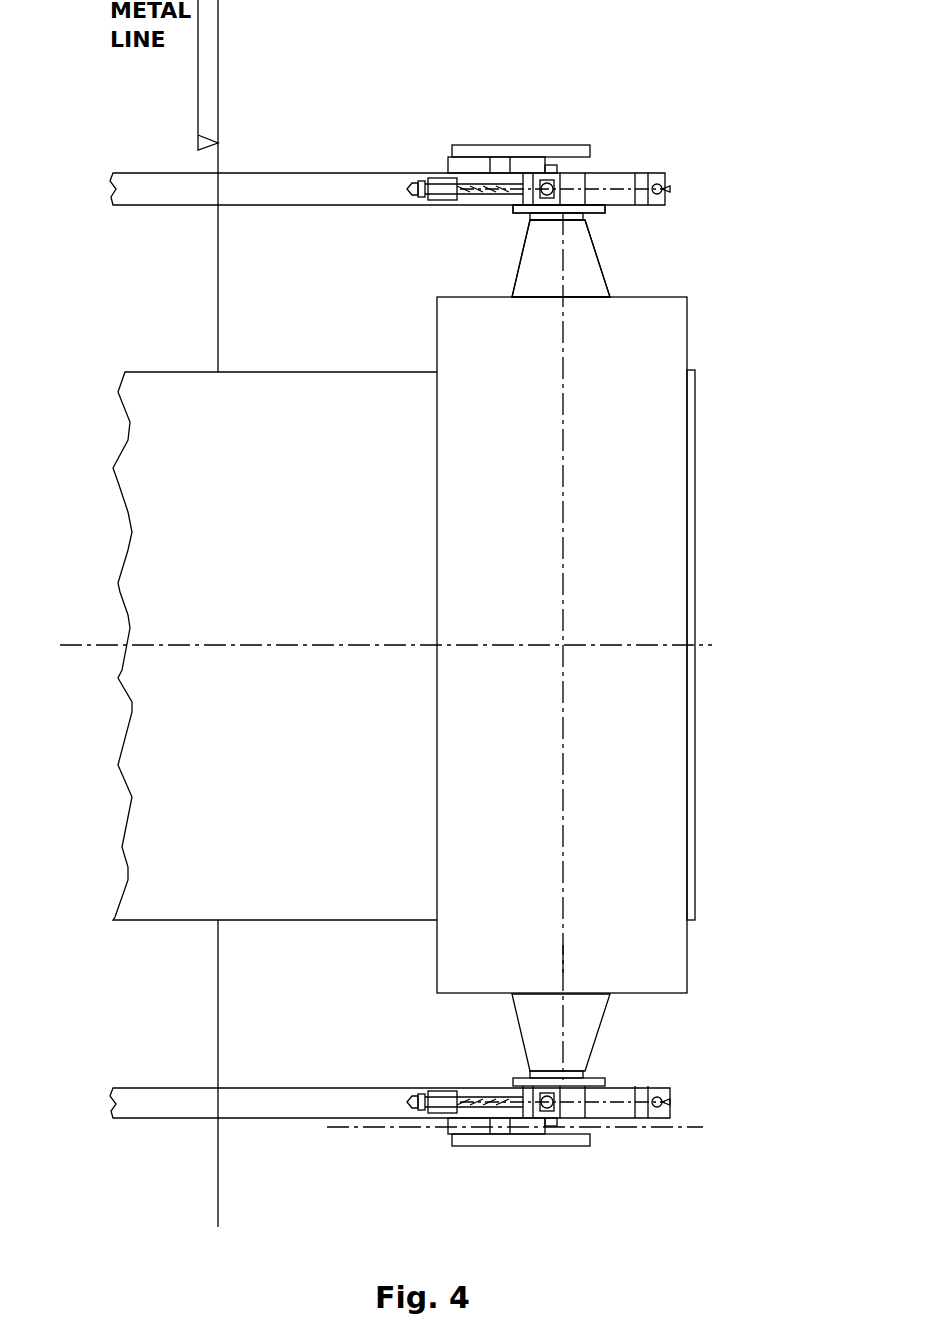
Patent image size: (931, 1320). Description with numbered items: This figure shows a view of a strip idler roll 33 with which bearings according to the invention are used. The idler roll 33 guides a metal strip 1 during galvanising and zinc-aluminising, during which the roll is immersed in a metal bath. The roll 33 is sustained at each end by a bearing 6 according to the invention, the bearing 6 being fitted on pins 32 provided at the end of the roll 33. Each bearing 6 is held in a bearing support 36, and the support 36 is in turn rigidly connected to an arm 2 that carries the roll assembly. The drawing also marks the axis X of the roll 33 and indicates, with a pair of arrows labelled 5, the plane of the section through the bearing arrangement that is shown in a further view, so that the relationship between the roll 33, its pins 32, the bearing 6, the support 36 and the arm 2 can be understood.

The metal strip 1 is at (393, 858).
The arm 2 is at (138, 190).
The section line 5- 5 is at (698, 1135).
The bearing 6 is at (555, 218).
The pins 32 is at (565, 218).
The idler roll 33 is at (633, 755).
The bearing support 36 is at (598, 180).
The axis X is at (570, 948).